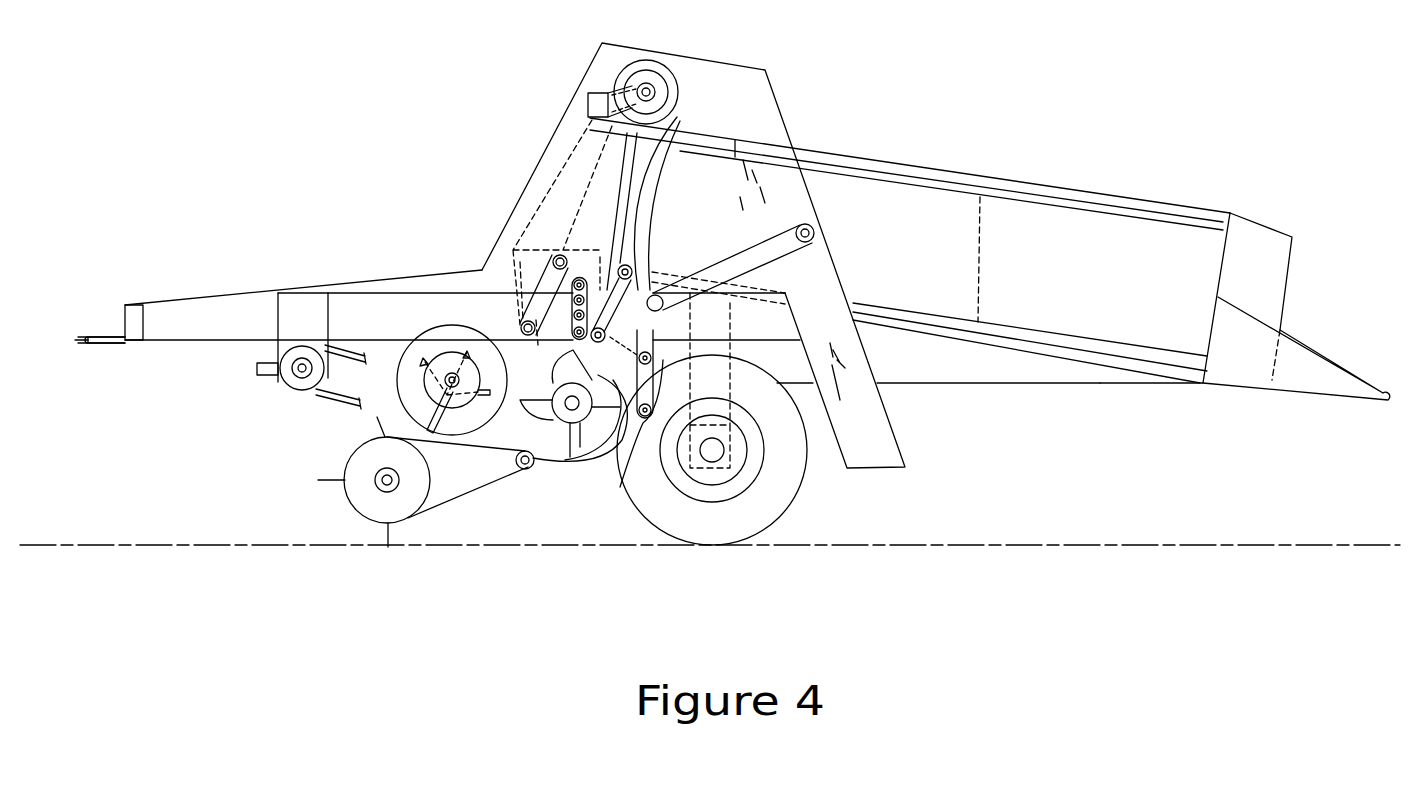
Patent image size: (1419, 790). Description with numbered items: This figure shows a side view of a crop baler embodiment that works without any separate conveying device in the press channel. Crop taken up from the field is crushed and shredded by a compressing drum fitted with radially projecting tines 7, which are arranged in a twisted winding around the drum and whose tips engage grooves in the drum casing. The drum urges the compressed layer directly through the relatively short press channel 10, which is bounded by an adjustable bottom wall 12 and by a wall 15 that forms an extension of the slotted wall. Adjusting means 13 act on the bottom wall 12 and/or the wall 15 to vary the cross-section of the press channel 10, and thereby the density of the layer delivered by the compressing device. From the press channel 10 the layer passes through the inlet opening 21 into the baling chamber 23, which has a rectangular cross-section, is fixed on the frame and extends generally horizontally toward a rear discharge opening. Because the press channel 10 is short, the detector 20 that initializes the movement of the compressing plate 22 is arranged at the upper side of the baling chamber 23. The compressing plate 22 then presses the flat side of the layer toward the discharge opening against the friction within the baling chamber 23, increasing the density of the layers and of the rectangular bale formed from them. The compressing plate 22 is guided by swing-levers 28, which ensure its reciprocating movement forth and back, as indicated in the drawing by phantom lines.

The tines 7 is at (577, 443).
The press channel 10 is at (613, 380).
The adjustable bottom wall 12 is at (688, 425).
The adjusting means 13 is at (652, 347).
The wall 15 is at (535, 295).
The detector 20 is at (627, 153).
The inlet opening 21 is at (617, 230).
The compressing plate 22 is at (627, 187).
The baling chamber 23 is at (898, 205).
The swing-levers 28 is at (548, 277).